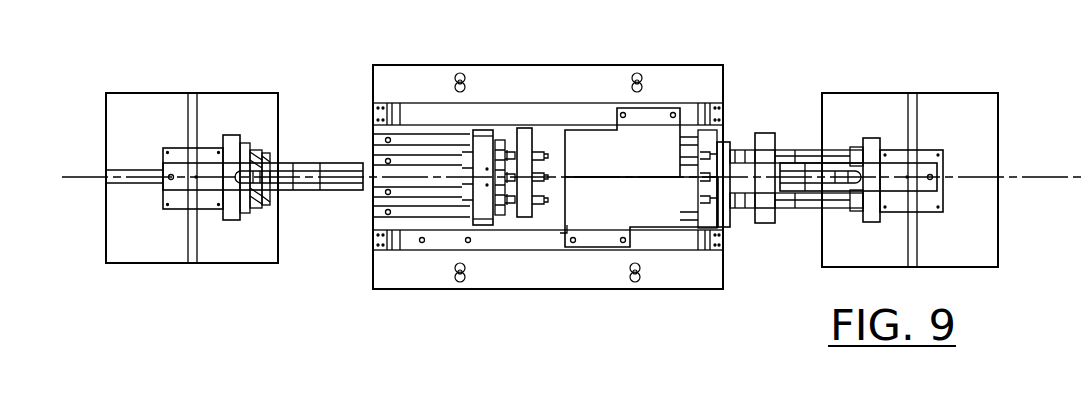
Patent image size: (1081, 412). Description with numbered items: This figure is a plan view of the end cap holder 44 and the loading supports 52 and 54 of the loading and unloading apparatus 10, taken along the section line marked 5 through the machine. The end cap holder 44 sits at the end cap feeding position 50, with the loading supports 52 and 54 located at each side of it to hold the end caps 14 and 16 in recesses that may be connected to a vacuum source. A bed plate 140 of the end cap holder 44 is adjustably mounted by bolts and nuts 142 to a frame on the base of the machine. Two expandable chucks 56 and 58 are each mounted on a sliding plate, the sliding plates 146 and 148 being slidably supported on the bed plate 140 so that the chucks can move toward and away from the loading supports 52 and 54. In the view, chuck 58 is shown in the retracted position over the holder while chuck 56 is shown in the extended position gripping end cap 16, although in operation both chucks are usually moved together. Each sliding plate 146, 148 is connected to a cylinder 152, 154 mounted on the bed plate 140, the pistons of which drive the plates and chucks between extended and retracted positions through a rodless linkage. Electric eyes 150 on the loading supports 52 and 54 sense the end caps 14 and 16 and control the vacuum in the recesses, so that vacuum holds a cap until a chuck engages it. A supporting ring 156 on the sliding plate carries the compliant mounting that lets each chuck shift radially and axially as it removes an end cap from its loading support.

The section line 5- 5 is at (1080, 40).
The loading and unloading apparatus 10 is at (447, 177).
The end cap 14 is at (253, 196).
The end cap 16 is at (813, 160).
The end cap holder 44 is at (687, 96).
The end cap feeding position 50 is at (1018, 177).
The loading support 52 is at (170, 158).
The loading support 54 is at (924, 157).
The expandable chuck 56 is at (769, 146).
The expandable chuck 58 is at (487, 142).
The bed plate 140 is at (720, 276).
The bolts and nuts 142 is at (461, 76).
The sliding plate 146 is at (652, 118).
The sliding plate 148 is at (670, 212).
The electric eyes 150 is at (303, 168).
The cylinder 152 is at (418, 112).
The cylinder 154 is at (437, 238).
The supporting ring 156 is at (527, 140).